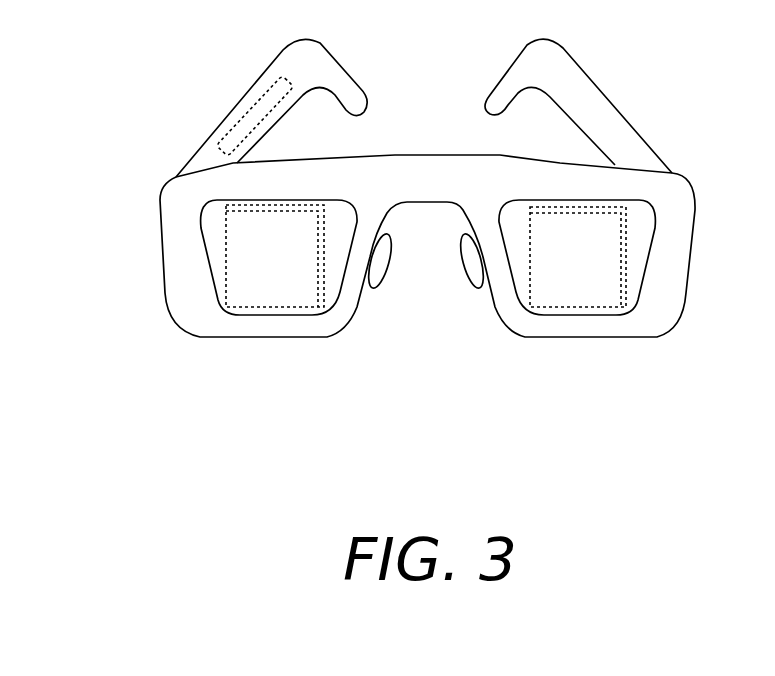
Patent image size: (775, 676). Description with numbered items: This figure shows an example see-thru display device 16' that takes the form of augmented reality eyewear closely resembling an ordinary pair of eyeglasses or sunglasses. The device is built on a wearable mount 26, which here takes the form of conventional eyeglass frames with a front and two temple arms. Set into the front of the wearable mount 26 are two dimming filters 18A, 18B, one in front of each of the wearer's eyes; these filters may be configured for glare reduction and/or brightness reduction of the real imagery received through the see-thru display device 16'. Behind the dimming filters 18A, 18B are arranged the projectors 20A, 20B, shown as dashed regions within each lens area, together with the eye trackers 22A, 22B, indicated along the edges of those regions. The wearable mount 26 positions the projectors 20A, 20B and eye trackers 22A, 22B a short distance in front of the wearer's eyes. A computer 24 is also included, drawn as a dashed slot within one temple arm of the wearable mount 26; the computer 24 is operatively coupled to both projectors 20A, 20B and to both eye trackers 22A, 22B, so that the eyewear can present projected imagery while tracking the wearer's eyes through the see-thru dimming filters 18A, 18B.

The see-thru display device 16' is at (400, 236).
The dimming filter 18A is at (197, 228).
The dimming filter 18B is at (650, 257).
The projector 20A is at (275, 256).
The projector 20B is at (578, 257).
The eye tracker 22A is at (320, 230).
The eye tracker 22B is at (547, 207).
The computer 24 is at (260, 102).
The wearable mount 26 is at (610, 93).